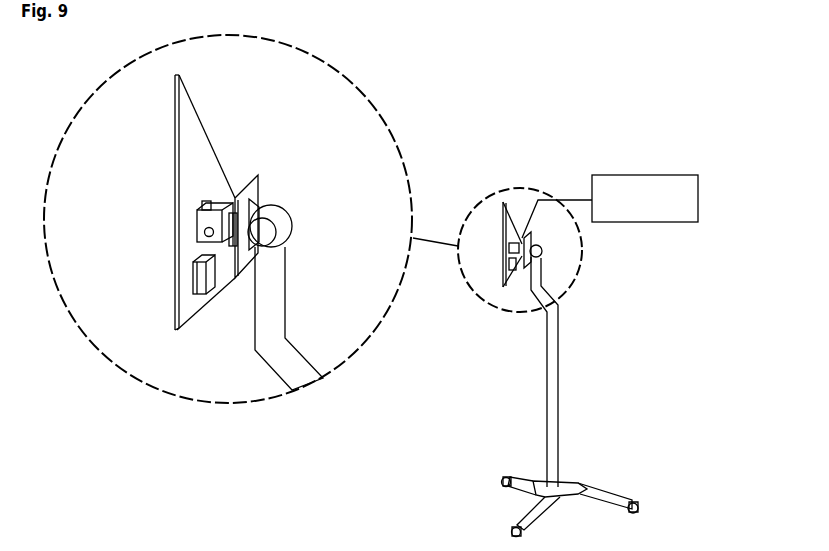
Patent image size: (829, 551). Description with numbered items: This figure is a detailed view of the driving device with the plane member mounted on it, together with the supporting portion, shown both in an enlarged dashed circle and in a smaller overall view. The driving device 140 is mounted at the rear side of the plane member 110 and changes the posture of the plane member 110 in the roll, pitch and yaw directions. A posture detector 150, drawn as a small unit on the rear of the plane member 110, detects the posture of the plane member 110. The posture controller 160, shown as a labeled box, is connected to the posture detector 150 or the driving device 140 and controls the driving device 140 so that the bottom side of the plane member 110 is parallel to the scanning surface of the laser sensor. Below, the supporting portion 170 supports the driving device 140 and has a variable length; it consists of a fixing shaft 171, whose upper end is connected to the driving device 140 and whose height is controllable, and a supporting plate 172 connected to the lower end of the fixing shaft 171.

The plane member 110 is at (186, 160).
The driving device 140 is at (224, 195).
The posture detector 150 is at (212, 292).
The posture controller 160 is at (645, 175).
The supporting portion 170 is at (594, 397).
The fixing shaft 171 is at (556, 390).
The supporting plate 172 is at (570, 485).